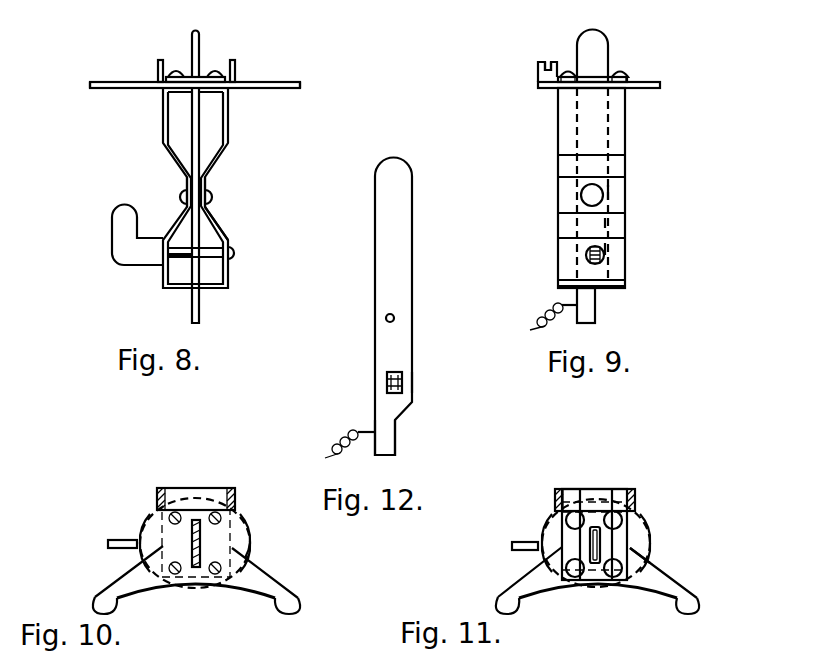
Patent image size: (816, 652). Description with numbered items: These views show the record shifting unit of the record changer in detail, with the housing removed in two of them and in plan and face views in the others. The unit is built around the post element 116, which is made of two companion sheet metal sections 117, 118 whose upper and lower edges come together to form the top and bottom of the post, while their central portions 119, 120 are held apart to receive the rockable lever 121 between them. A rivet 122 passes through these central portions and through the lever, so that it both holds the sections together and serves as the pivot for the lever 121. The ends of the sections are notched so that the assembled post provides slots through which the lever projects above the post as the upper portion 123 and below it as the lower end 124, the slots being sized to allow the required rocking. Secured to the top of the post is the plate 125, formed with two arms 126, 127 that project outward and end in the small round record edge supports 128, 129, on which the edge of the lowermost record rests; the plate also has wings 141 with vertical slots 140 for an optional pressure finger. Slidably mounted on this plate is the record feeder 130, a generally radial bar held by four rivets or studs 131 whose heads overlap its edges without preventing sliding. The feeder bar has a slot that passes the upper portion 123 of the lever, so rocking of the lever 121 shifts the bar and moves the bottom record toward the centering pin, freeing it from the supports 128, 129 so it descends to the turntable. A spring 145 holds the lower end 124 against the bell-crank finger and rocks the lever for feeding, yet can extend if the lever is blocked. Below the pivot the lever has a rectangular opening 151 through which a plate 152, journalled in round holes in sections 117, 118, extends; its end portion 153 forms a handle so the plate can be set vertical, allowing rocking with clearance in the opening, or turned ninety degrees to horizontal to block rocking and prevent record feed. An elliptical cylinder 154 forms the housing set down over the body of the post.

In FIG. 8, the post element 116 is at (206, 188).
In FIG. 9, the post element 116 is at (592, 188).
In FIG. 8, the sheet metal section 117 is at (166, 150).
In FIG. 9, the sheet metal section 117 is at (617, 143).
In FIG. 8, the sheet metal section 118 is at (229, 141).
In FIG. 8, the central portion 119 is at (186, 180).
In FIG. 9, the central portion 119 is at (613, 190).
In FIG. 8, the central portion 120 is at (207, 180).
In FIG. 8, the rockable lever 121 is at (212, 231).
In FIG. 9, the rockable lever 121 is at (605, 222).
In FIG. 12, the rockable lever 121 is at (384, 320).
In FIG. 10, the rockable lever 121 is at (201, 541).
In FIG. 8, the rivet 122 is at (181, 198).
In FIG. 9, the rivet 122 is at (582, 199).
In FIG. 8, the upper projecting portion of the lever 123 is at (201, 41).
In FIG. 9, the upper projecting portion of the lever 123 is at (596, 52).
In FIG. 12, the upper projecting portion of the lever 123 is at (393, 177).
In FIG. 11, the upper projecting portion of the lever 123 is at (603, 545).
In FIG. 8, the lower end of the rock lever 124 is at (201, 307).
In FIG. 9, the lower end of the rock lever 124 is at (584, 304).
In FIG. 12, the lower end of the rock lever 124 is at (386, 437).
In FIG. 8, the plate 125 is at (251, 79).
In FIG. 9, the plate 125 is at (642, 79).
In FIG. 10, the plate 125 is at (246, 561).
In FIG. 11, the plate 125 is at (641, 551).
In FIG. 8, the arm 126 is at (128, 90).
In FIG. 9, the arm 126 is at (632, 89).
In FIG. 10, the arm 126 is at (133, 584).
In FIG. 11, the arm 126 is at (535, 584).
In FIG. 8, the arm 127 is at (241, 89).
In FIG. 10, the arm 127 is at (259, 581).
In FIG. 11, the arm 127 is at (656, 579).
In FIG. 8, the record edge support 128 is at (96, 87).
In FIG. 10, the record edge support 128 is at (97, 600).
In FIG. 11, the record edge support 128 is at (500, 600).
In FIG. 8, the record edge support 129 is at (289, 89).
In FIG. 10, the record edge support 129 is at (301, 599).
In FIG. 11, the record edge support 129 is at (700, 600).
In FIG. 8, the record feeder 130 is at (183, 71).
In FIG. 9, the record feeder 130 is at (588, 73).
In FIG. 11, the record feeder 130 is at (601, 545).
In FIG. 8, the rivets or studs 131 is at (172, 70).
In FIG. 9, the rivets or studs 131 is at (560, 72).
In FIG. 10, the rivets or studs 131 is at (196, 543).
In FIG. 11, the rivets or studs 131 is at (566, 517).
In FIG. 9, the vertical slots 140 is at (542, 61).
In FIG. 8, the wings 141 is at (157, 68).
In FIG. 9, the wings 141 is at (545, 80).
In FIG. 10, the wings 141 is at (157, 496).
In FIG. 11, the wings 141 is at (556, 492).
In FIG. 9, the spring 145 is at (556, 306).
In FIG. 12, the spring 145 is at (358, 432).
In FIG. 9, the rectangular opening 151 is at (610, 248).
In FIG. 12, the rectangular opening 151 is at (403, 378).
In FIG. 8, the plate 152 is at (213, 256).
In FIG. 9, the plate 152 is at (586, 256).
In FIG. 12, the plate 152 is at (387, 381).
In FIG. 8, the end portion 153 is at (121, 230).
In FIG. 10, the end portion 153 is at (118, 539).
In FIG. 11, the end portion 153 is at (522, 541).
In FIG. 10, the elliptical cylinder 154 is at (252, 542).
In FIG. 11, the elliptical cylinder 154 is at (636, 578).